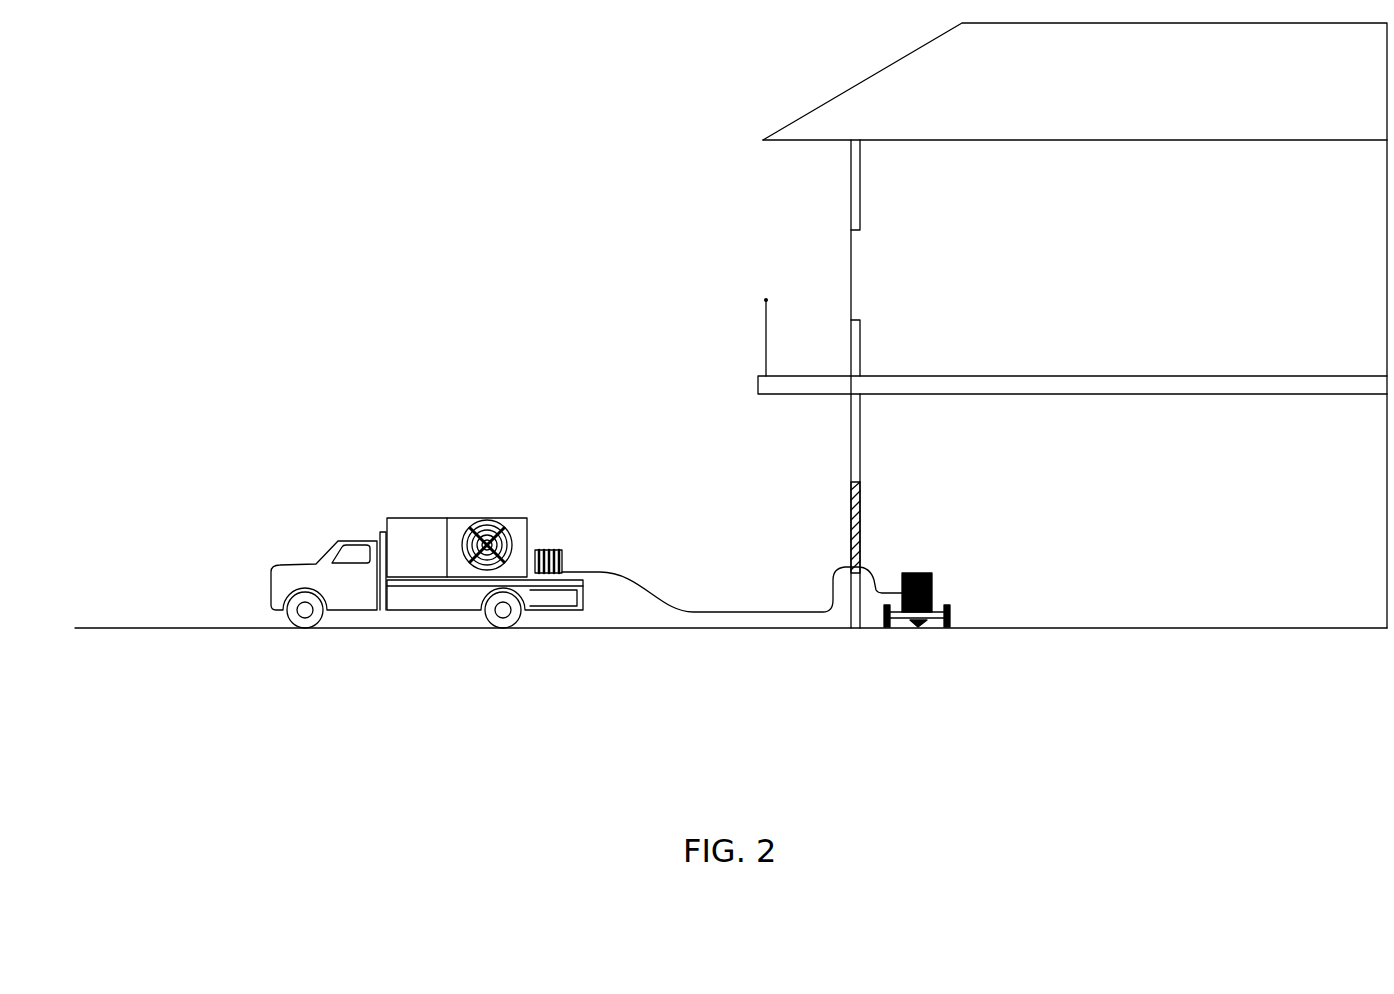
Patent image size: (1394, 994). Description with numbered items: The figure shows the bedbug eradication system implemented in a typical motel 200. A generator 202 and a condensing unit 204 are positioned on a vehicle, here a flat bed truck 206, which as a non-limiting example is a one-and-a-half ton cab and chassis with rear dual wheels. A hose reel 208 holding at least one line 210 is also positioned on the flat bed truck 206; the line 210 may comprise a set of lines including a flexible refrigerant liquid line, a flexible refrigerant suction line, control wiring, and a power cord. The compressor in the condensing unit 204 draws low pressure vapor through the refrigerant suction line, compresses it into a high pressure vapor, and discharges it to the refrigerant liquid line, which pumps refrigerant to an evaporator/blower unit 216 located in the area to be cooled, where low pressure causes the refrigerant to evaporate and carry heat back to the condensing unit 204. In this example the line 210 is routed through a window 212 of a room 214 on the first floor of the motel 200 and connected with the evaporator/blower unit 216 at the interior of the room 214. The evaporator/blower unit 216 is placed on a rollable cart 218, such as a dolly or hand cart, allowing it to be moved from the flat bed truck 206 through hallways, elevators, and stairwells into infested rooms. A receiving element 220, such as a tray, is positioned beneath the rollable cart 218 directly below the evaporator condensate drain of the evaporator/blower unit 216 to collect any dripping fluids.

The motel 200 is at (833, 100).
The generator 202 is at (423, 517).
The condensing unit 204 is at (497, 517).
The flat bed truck 206 is at (583, 612).
The hose reel 208 is at (553, 548).
The line 210 is at (657, 593).
The window 212 is at (850, 510).
The room 214 is at (1103, 606).
The evaporator/blower unit 216 is at (932, 575).
The rollable cart 218 is at (950, 625).
The receiving element 220 is at (920, 625).